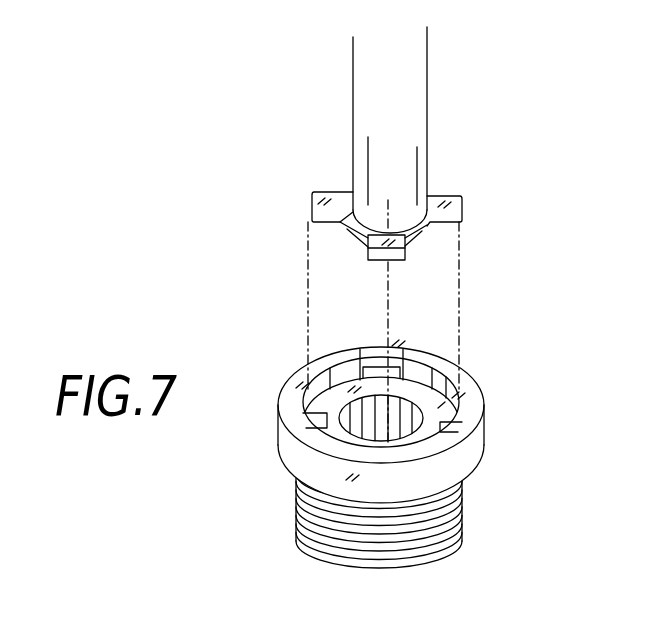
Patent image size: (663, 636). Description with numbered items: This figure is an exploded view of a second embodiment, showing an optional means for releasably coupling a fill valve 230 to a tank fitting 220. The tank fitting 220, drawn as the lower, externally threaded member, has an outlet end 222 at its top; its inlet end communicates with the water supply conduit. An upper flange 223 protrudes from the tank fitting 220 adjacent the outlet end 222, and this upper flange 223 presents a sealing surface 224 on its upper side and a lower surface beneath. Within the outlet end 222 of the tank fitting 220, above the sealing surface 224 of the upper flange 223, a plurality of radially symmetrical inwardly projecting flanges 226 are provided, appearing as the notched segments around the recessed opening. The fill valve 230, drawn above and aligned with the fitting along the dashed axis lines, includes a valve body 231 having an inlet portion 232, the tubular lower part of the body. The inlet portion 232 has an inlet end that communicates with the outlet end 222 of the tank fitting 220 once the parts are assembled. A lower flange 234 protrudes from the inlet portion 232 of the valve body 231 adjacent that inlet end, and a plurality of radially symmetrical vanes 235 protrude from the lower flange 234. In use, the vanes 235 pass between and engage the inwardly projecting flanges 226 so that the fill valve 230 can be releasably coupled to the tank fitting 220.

The tank fitting 220 is at (275, 510).
The outlet end 222 is at (424, 429).
The upper flange 223 is at (285, 461).
The sealing surface 224 is at (329, 390).
The inwardly projecting flanges 226 is at (388, 357).
The fill valve 230 is at (282, 142).
The valve body 231 is at (458, 50).
The inlet portion 232 is at (428, 132).
The lower flange 234 is at (421, 228).
The vanes 235 is at (312, 221).